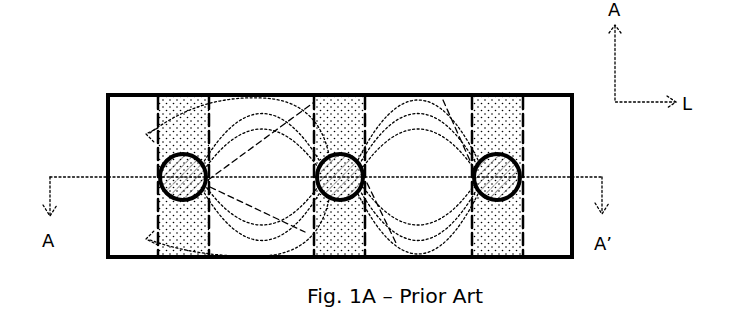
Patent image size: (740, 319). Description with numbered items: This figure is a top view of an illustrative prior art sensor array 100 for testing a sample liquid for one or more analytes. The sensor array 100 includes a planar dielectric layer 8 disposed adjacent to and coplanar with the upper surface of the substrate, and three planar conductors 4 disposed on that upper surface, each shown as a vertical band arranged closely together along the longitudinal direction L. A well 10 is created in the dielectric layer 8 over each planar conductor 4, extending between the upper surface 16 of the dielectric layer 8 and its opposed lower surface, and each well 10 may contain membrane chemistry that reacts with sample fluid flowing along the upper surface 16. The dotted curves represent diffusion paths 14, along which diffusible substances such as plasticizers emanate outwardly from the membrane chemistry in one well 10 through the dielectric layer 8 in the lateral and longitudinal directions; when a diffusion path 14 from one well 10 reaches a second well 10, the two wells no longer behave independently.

The sensor array 100 is at (160, 72).
The planar conductor 4 is at (192, 110).
The diffusion path 14 is at (249, 103).
The well 10 is at (342, 152).
The dielectric layer 8 is at (537, 120).
The upper surface of the dielectric layer 16 is at (557, 238).